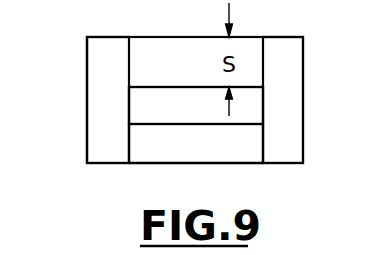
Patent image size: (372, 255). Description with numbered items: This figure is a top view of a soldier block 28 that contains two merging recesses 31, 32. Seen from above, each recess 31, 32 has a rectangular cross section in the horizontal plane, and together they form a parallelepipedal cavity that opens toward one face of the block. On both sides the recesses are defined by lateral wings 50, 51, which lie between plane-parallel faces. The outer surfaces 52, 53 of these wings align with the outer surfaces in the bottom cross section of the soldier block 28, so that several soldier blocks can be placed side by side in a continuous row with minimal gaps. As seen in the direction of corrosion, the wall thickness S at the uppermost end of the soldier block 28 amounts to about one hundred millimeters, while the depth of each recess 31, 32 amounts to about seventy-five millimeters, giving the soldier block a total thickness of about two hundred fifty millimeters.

The soldier block 28 is at (292, 95).
The recess 31 is at (177, 102).
The recess 32 is at (228, 147).
The lateral wing 50 is at (288, 138).
The lateral wing 51 is at (106, 141).
The outer surface 52 is at (303, 52).
The outer surface 53 is at (87, 78).